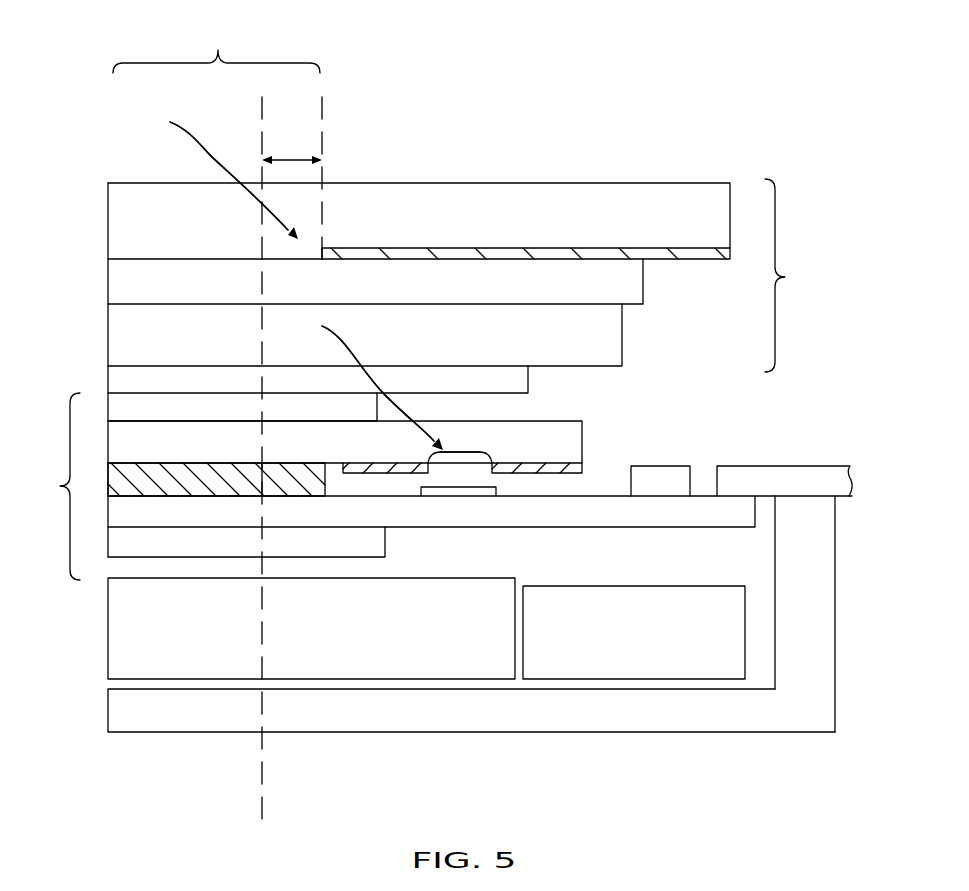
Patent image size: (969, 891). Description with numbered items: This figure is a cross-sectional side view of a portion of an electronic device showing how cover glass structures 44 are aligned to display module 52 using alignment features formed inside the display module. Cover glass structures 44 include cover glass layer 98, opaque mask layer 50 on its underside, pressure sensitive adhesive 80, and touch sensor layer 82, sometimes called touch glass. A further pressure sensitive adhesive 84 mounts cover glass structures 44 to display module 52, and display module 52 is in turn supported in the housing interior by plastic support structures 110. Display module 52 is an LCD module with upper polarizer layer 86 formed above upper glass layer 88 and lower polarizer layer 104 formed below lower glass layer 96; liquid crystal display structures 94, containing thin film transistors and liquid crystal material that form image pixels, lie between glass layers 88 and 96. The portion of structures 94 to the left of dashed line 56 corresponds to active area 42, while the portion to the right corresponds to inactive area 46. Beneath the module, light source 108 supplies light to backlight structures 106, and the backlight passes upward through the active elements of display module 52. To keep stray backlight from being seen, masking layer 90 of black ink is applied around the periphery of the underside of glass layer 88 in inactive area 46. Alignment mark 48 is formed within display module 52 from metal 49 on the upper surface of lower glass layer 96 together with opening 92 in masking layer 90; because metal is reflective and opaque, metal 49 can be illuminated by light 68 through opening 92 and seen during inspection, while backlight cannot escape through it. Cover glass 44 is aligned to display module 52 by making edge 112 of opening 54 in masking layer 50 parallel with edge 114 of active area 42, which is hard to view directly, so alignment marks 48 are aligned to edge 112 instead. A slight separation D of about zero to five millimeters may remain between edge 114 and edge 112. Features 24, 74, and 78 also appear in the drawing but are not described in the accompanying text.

The edge of nozzle plate 24 is at (322, 142).
The active area 42 is at (261, 463).
The cover glass structures 44 is at (793, 275).
The inactive area 46 is at (267, 559).
The alignment mark 48 is at (478, 438).
The metal 49 is at (462, 495).
The opaque mask layer 50 is at (697, 259).
The display module 52 is at (53, 486).
The opening 54 is at (216, 50).
The dashed line 56 is at (262, 116).
The light 68 is at (212, 157).
The bond pad 74 is at (785, 474).
The bond pad 78 is at (677, 474).
The pressure sensitive adhesive 80 is at (633, 288).
The touch sensor layer 82 is at (605, 350).
The pressure sensitive adhesive 84 is at (520, 380).
The upper polarizer layer 86 is at (120, 404).
The upper glass layer 88 is at (578, 441).
The masking layer 90 is at (578, 471).
The opening 92 is at (460, 452).
The liquid crystal display structures 94 is at (108, 484).
The lower glass layer 96 is at (608, 518).
The cover glass layer 98 is at (648, 191).
The lower polarizer layer 104 is at (378, 540).
The backlight structures 106 is at (147, 672).
The light source 108 is at (735, 665).
The plastic support structures 110 is at (822, 623).
The edge 112 is at (328, 232).
The edge 114 is at (269, 452).
The separation D is at (292, 150).